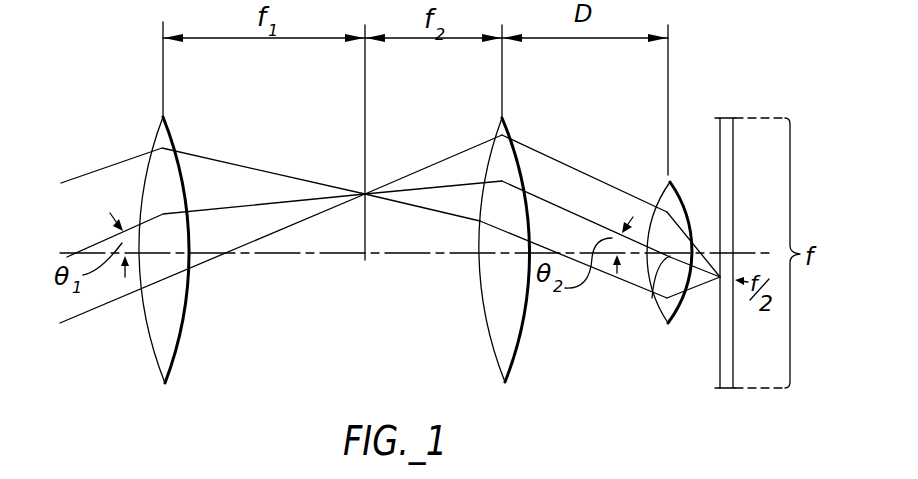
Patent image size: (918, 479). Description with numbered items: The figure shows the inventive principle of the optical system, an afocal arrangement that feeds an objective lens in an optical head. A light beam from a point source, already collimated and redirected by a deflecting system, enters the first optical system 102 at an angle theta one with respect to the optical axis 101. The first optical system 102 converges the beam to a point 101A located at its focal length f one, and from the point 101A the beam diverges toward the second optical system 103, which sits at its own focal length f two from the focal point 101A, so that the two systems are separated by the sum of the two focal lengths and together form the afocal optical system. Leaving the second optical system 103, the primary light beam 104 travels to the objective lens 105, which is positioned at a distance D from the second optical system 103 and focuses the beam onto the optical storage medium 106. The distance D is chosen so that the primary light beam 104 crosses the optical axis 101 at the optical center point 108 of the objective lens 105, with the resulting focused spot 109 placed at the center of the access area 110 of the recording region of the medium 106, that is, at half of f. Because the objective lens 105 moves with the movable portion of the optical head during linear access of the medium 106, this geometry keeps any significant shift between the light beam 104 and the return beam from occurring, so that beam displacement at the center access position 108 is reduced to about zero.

The optical axis 101 is at (340, 258).
The focal point 101A is at (365, 193).
The first optical system 102 is at (166, 120).
The second optical system 103 is at (506, 122).
The primary light beam 104 is at (551, 200).
The objective lens 105 is at (662, 326).
The optical storage medium 106 is at (714, 139).
The optical center point 108 is at (652, 297).
The focused spot 109 is at (713, 285).
The access area 110 is at (718, 193).